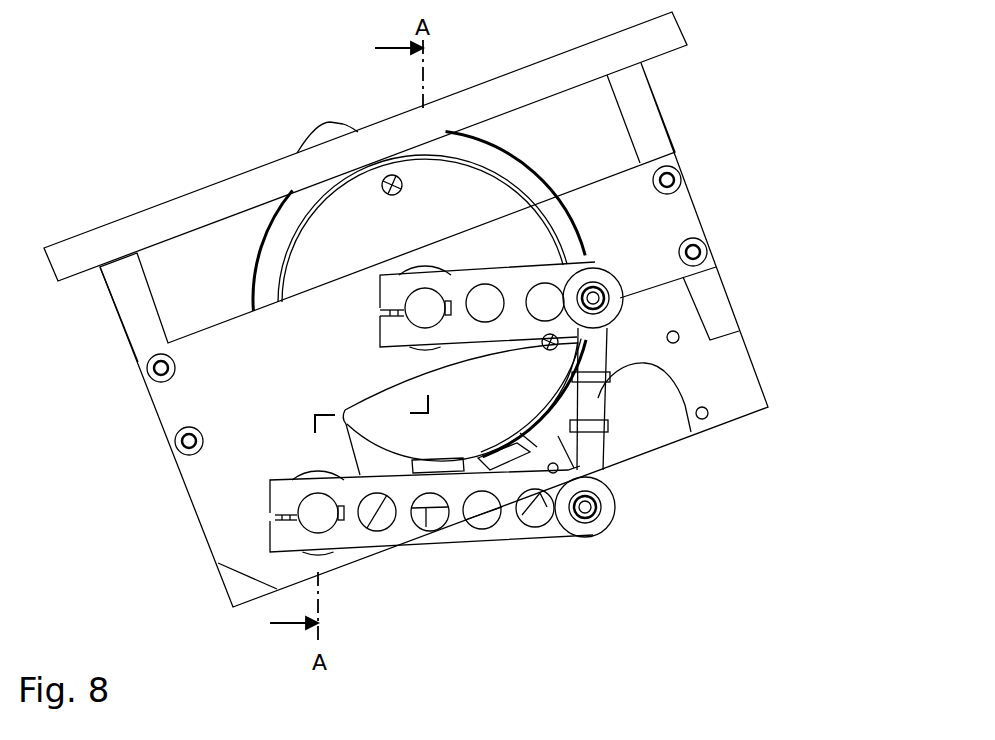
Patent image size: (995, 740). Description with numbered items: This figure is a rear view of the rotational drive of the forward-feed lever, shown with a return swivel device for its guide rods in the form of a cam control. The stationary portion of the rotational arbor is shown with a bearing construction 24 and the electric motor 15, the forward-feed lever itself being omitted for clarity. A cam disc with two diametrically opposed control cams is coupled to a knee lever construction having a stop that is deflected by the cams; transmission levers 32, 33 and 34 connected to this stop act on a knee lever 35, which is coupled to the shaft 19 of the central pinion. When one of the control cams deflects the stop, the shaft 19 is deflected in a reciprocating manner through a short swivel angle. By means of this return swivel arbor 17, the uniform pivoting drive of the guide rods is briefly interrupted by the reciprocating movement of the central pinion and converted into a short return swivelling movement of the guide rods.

The bearing construction 24 is at (670, 33).
The electric motor 15 is at (493, 186).
The knee lever 35 is at (585, 258).
The shaft 19 is at (423, 308).
The return swivel arbor 17 is at (408, 325).
The transmission lever 34 is at (595, 447).
The transmission lever 32 is at (307, 508).
The transmission lever 33 is at (283, 532).